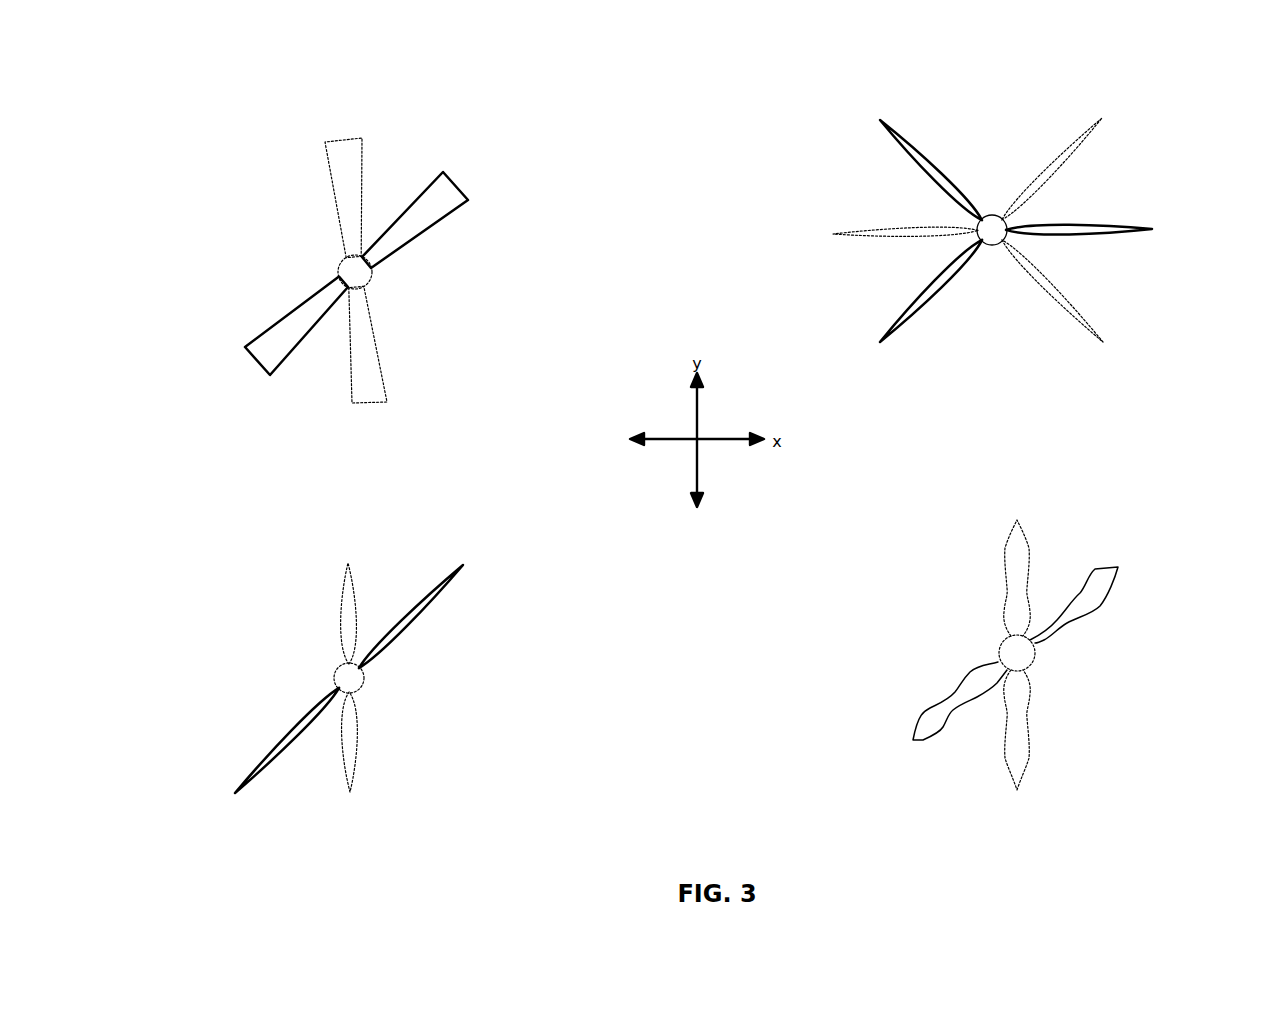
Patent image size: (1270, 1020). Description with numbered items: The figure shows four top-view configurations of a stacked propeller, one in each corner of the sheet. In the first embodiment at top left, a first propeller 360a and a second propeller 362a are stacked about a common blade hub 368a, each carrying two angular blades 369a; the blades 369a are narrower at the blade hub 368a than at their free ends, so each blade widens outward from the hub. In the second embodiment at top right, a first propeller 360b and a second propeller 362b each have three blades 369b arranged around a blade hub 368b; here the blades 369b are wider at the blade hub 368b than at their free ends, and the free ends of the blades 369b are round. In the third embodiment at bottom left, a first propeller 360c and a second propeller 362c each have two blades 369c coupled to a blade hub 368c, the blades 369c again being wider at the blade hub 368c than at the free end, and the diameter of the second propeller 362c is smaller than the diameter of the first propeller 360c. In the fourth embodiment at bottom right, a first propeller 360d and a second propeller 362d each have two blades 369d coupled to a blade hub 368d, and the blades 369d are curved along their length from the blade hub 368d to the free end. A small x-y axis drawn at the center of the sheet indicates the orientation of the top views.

The first propeller 360a is at (377, 232).
The second propeller 362a is at (338, 163).
The blade hub 368a is at (339, 264).
The blades 369a is at (358, 328).
The first propeller 360b is at (1057, 192).
The second propeller 362b is at (898, 233).
The blade hub 368b is at (992, 245).
The blades 369b is at (1072, 228).
The first propeller 360c is at (396, 667).
The second propeller 362c is at (355, 602).
The blade hub 368c is at (363, 694).
The blades 369c is at (330, 679).
The first propeller 360d is at (1070, 688).
The second propeller 362d is at (1012, 542).
The blade hub 368d is at (1005, 652).
The blades 369d is at (1022, 732).